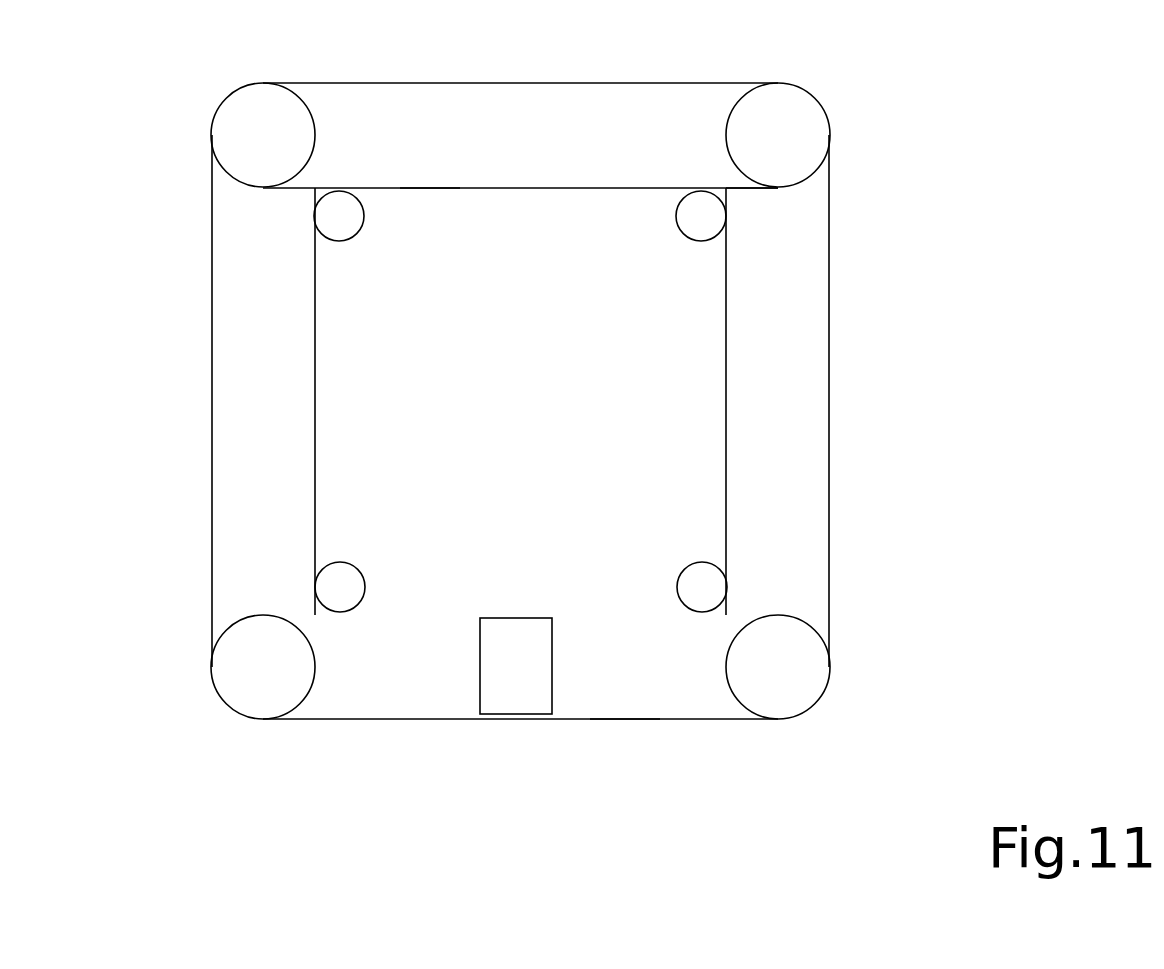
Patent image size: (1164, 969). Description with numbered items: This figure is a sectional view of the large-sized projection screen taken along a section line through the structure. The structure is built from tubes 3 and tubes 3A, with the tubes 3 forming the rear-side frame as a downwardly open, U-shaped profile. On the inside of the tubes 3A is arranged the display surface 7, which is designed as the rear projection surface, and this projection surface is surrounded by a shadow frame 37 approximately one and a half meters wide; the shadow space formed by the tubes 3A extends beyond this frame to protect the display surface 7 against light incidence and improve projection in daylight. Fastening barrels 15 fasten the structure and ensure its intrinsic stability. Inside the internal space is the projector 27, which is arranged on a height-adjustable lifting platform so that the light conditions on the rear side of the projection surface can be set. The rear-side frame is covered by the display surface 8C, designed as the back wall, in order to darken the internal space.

The tubes 3 is at (227, 385).
The tubes 3A is at (250, 82).
The display surface 7 is at (420, 190).
The shadow frame 37 is at (743, 192).
The fastening barrels 15 is at (357, 237).
The projector 27 is at (495, 632).
The display surface 8C is at (622, 719).